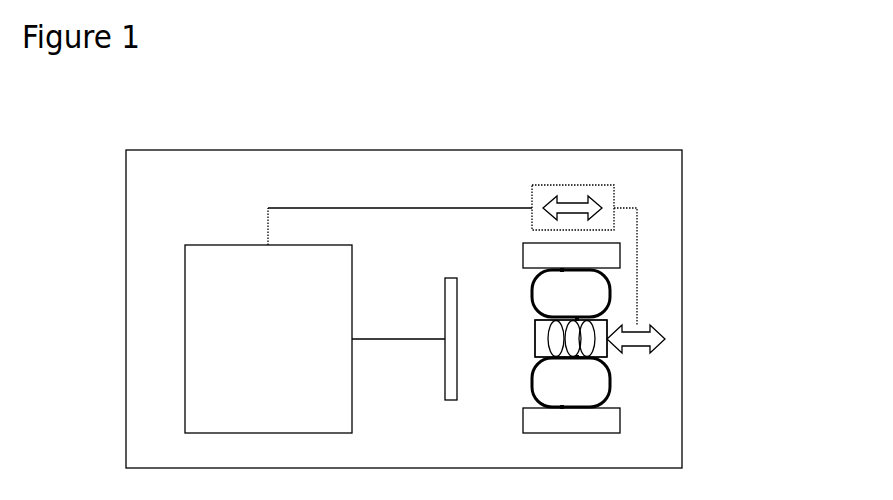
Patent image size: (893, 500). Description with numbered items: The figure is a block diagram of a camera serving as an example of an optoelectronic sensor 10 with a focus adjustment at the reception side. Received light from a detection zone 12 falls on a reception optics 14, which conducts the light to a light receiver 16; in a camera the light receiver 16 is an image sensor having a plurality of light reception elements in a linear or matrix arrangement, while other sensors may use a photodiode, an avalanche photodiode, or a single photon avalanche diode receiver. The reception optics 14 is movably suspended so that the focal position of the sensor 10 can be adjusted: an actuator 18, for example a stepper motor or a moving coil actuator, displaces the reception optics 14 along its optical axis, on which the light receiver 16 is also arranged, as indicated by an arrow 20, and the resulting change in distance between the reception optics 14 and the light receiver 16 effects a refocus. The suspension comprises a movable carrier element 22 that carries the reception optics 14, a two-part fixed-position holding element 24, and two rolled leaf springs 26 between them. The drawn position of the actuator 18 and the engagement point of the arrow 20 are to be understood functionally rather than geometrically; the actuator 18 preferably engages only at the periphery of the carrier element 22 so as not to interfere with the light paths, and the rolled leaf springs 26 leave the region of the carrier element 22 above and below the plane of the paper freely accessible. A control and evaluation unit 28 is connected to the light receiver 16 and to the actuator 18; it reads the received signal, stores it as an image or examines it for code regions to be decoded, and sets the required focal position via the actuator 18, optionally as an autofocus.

The optoelectronic sensor 10 is at (648, 117).
The detection zone 12 is at (868, 207).
The reception optics 14 is at (557, 340).
The light receiver 16 is at (445, 358).
The actuator 18 is at (537, 193).
The arrow 20 is at (665, 338).
The carrier element 22 is at (537, 346).
The holding element 24 is at (608, 255).
The rolled leaf springs 26 is at (612, 294).
The control and evaluation unit 28 is at (185, 322).